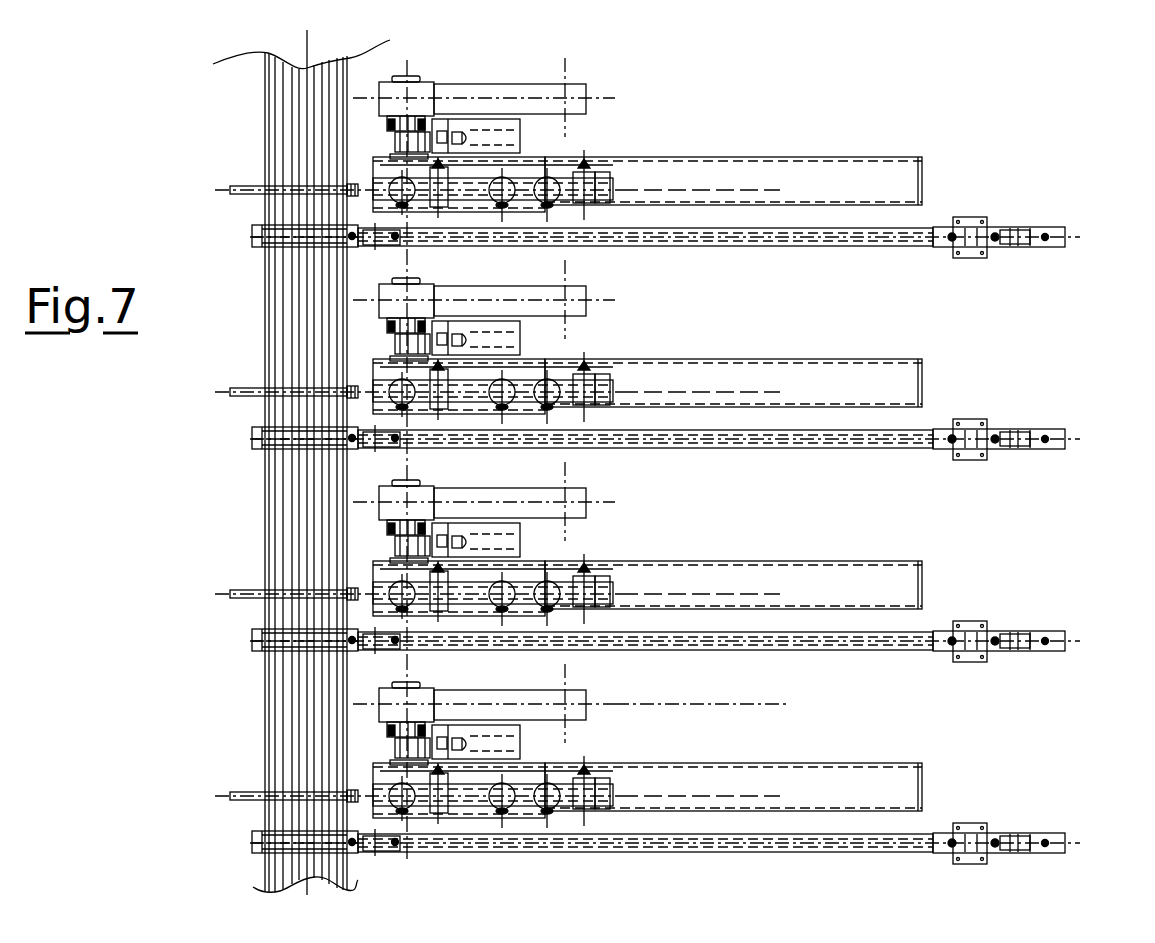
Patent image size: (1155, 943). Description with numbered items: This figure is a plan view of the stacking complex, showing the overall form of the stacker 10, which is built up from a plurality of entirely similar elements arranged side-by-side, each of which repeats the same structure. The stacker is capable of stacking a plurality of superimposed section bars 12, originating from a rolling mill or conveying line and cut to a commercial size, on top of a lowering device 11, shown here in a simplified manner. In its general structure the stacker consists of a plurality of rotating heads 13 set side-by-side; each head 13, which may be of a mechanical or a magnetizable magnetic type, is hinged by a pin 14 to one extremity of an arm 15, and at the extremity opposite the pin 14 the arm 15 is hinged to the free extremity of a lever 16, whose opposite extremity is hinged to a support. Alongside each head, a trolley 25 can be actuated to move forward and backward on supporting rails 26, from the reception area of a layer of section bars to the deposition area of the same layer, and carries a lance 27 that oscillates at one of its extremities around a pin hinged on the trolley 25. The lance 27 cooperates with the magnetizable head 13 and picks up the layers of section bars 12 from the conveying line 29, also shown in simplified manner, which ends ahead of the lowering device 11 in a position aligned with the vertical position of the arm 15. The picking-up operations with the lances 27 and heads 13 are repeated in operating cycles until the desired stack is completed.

The stacker 10 is at (1052, 157).
The lowering device 11 is at (256, 237).
The section bars 12 is at (280, 510).
The rotating head 13 is at (510, 128).
The pin 14 is at (395, 142).
The arm 15 is at (385, 124).
The lever 16 is at (464, 92).
The trolley 25 is at (620, 174).
The supporting rails 26 is at (852, 157).
The lance 27 is at (238, 185).
The conveying line 29 is at (800, 241).